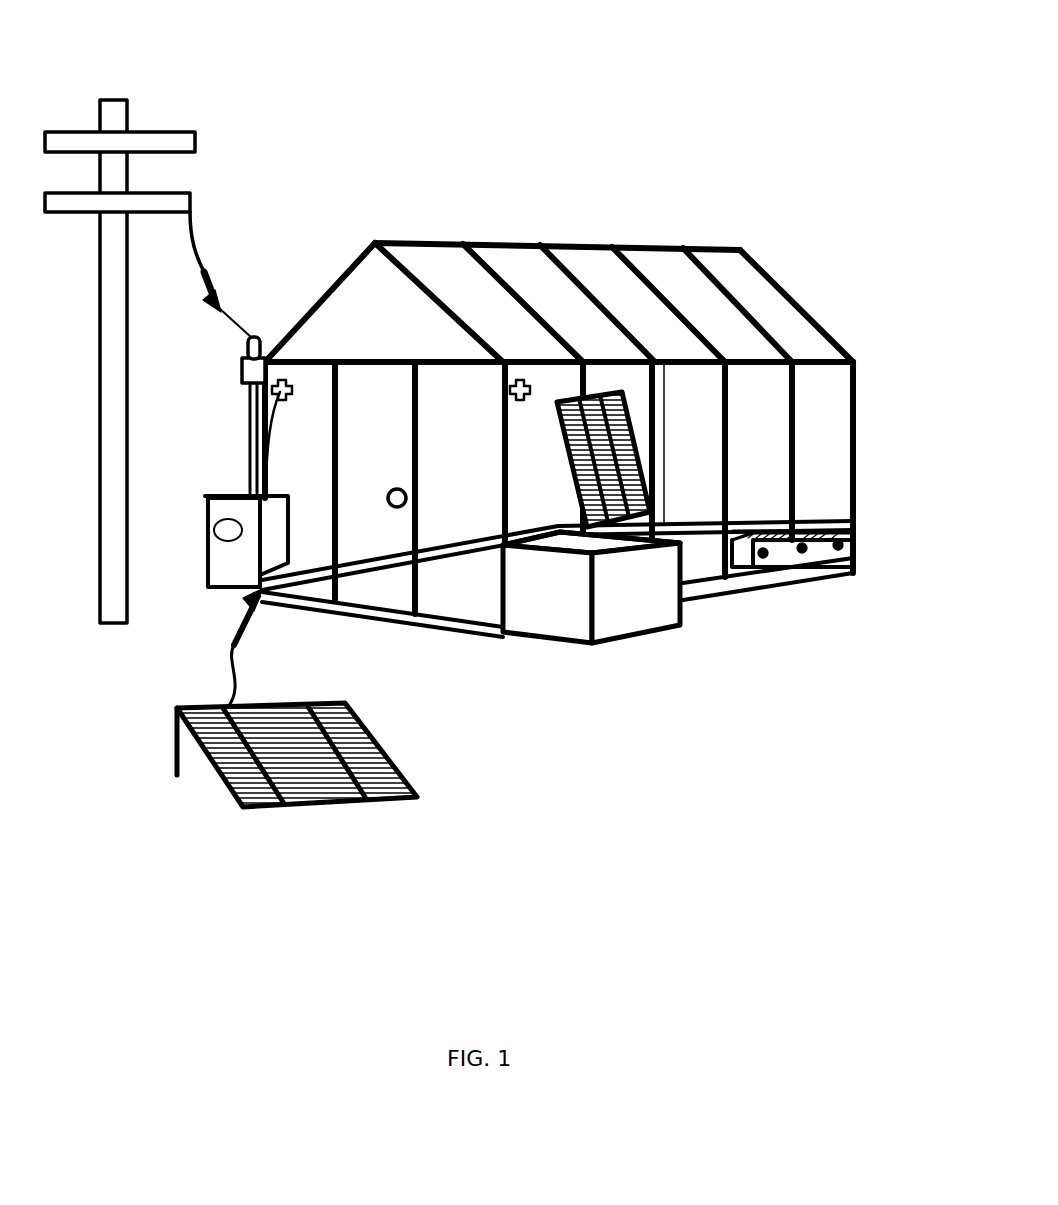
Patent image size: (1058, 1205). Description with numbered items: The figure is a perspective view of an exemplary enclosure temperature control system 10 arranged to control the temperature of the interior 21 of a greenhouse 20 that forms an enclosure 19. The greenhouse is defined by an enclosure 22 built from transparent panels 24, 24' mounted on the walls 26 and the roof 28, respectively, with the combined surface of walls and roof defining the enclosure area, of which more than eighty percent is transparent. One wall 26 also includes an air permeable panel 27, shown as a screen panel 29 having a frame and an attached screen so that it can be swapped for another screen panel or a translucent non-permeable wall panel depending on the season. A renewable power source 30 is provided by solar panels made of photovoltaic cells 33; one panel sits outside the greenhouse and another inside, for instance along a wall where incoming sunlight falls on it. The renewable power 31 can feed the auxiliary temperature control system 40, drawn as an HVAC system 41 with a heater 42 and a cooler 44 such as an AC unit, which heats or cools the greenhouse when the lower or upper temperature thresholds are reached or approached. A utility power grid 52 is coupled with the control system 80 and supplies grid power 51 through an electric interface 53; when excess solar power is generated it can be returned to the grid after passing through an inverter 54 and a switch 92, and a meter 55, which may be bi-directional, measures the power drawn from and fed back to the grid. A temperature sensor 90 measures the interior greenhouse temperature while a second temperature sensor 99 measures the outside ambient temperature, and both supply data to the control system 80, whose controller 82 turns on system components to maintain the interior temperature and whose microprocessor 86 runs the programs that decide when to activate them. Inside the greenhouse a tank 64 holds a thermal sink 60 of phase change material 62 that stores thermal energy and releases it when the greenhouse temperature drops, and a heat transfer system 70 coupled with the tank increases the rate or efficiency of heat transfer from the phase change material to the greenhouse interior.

The enclosure temperature control system 10 is at (346, 156).
The enclosure 19 is at (697, 248).
The greenhouse 20 is at (604, 395).
The interior 21 is at (768, 305).
The enclosure 22 is at (350, 320).
The transparent panel 24 is at (509, 266).
The transparent panel 24' is at (878, 451).
The wall 26 is at (818, 398).
The air permeable panel 27 is at (833, 428).
The roof 28 is at (415, 270).
The screen panel 29 is at (825, 384).
The renewable power source 30 is at (311, 720).
The renewable power 31 is at (262, 612).
The photovoltaic cells 33 is at (360, 727).
The auxiliary temperature control system 40 is at (589, 630).
The HVAC system 41 is at (560, 617).
The heater 42 is at (602, 623).
The cooler 44 is at (657, 612).
The grid power 51 is at (200, 258).
The power grid 52 is at (148, 132).
The electric interface 53 is at (220, 524).
The inverter 54 is at (222, 393).
The meter 55 is at (242, 367).
The thermal sink 60 is at (827, 556).
The phase change material 62 is at (840, 522).
The tank 64 is at (803, 570).
The heat transfer system 70 is at (768, 560).
The control system 80 is at (227, 607).
The controller 82 is at (230, 573).
The microprocessor 86 is at (217, 528).
The temperature sensor 90 is at (288, 398).
The switch 92 is at (268, 347).
The temperature sensor 99 is at (520, 398).